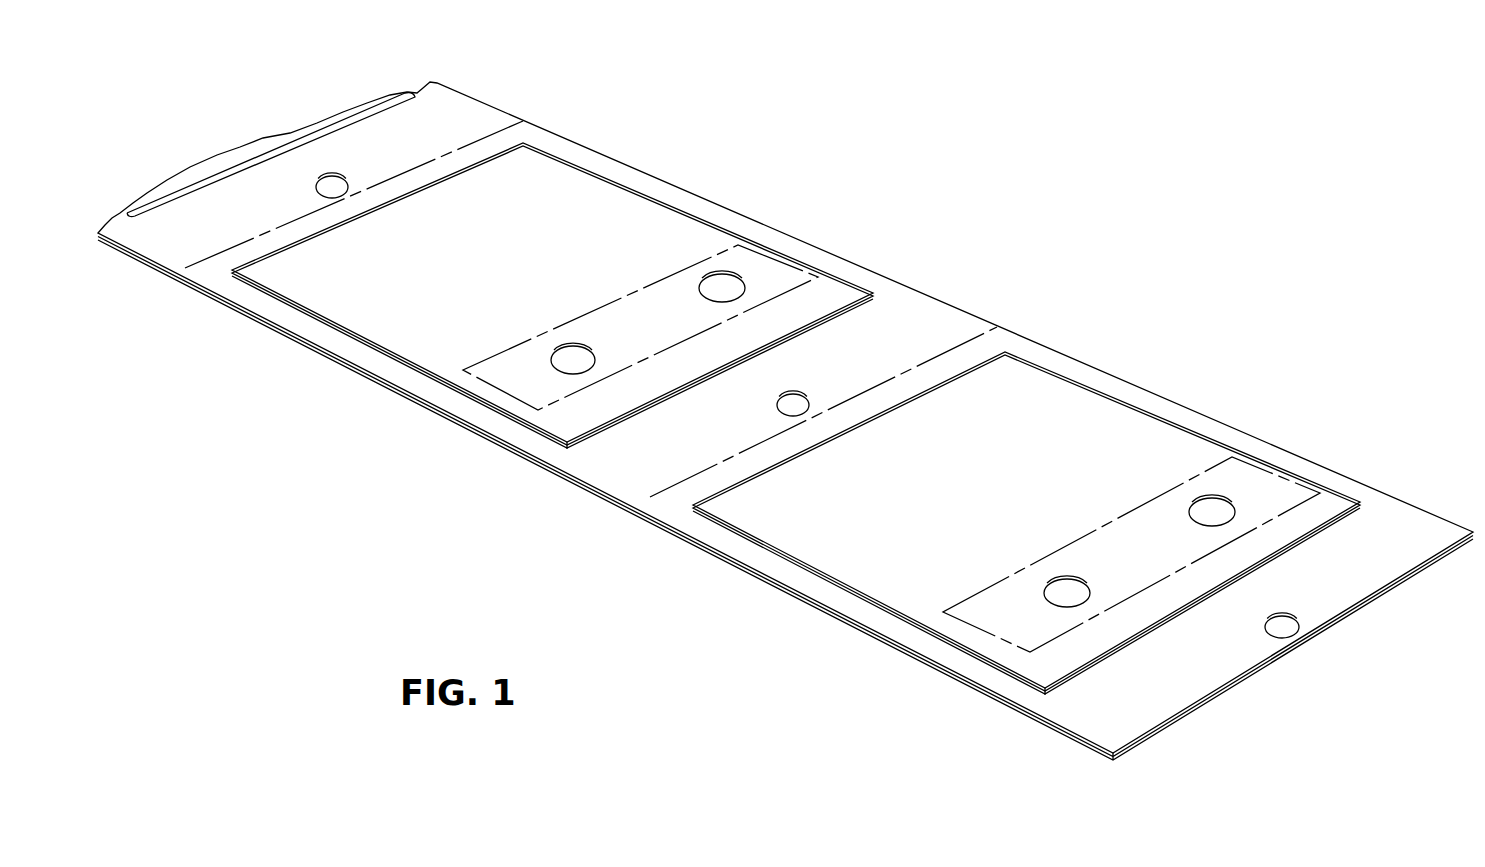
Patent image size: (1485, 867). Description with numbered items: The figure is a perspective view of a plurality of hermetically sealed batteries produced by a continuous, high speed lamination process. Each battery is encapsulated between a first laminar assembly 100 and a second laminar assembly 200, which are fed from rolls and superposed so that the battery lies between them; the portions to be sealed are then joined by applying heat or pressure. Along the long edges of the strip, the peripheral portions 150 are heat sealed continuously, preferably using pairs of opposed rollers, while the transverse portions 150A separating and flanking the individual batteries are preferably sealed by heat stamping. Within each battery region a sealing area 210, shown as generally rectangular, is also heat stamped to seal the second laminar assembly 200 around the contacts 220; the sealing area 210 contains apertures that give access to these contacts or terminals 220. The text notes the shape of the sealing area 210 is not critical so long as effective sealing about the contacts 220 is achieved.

The first laminar assembly 100 is at (500, 254).
The peripheral portions 150 is at (733, 214).
The portions 150A is at (470, 110).
The second laminar assembly 200 is at (1261, 682).
The sealing area 210 is at (1037, 642).
The contacts 220 is at (710, 290).